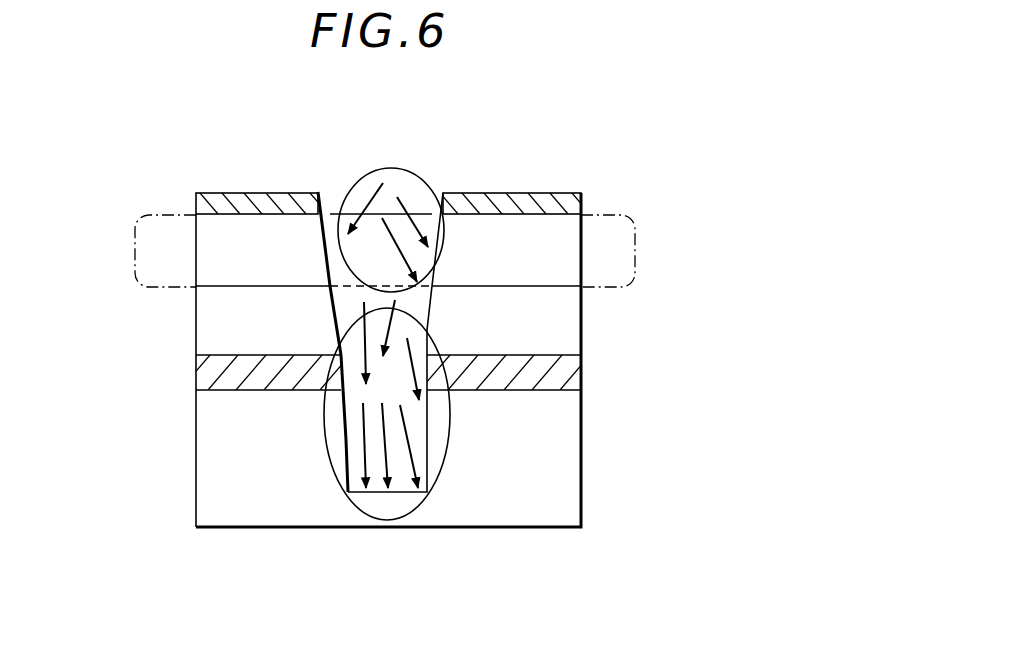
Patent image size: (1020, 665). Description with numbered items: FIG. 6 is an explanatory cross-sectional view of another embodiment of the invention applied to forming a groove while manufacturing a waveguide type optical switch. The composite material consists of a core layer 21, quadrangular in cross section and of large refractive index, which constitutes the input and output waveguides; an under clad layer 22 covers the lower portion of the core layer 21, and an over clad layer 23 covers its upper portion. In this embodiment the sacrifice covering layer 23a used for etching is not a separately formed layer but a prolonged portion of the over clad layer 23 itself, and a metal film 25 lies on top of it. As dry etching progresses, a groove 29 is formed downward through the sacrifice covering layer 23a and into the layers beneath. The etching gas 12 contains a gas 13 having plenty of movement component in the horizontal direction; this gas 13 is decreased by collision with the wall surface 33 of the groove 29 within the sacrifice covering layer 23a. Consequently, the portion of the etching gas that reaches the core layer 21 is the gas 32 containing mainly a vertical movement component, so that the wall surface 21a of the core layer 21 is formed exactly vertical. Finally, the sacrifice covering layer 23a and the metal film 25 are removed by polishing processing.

The etching gas 12 is at (378, 186).
The gas 13 is at (418, 178).
The metal film 25 is at (553, 192).
The sacrifice covering layer 23a is at (637, 227).
The over clad layer 23 is at (582, 303).
The core layer 21 is at (583, 368).
The under clad layer 22 is at (583, 510).
The wall surface 33 is at (333, 252).
The wall surface 21a is at (345, 350).
The groove 29 is at (346, 446).
The gas 32 is at (355, 505).